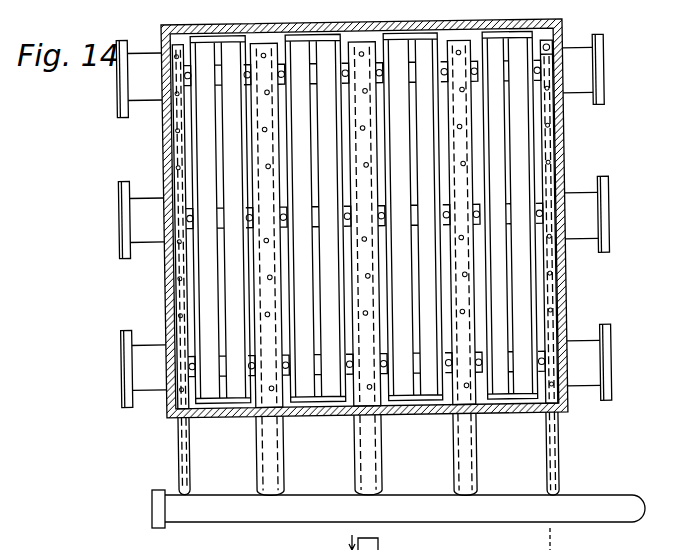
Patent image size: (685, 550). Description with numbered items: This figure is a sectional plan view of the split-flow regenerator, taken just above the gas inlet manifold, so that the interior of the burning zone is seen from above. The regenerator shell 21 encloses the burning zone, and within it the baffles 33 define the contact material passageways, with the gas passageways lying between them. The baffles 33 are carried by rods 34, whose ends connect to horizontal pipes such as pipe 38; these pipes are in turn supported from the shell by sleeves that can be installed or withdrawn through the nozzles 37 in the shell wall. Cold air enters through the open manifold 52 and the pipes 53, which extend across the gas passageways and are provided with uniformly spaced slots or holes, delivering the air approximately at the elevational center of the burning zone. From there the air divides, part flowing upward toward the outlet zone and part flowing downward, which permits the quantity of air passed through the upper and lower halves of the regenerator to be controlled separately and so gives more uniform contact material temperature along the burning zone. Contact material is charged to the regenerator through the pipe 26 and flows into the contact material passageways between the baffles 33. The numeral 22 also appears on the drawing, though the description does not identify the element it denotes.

The regenerator shell 21 is at (564, 154).
The base 22 is at (514, 539).
The pipe 26 is at (380, 545).
The baffle 33 is at (208, 282).
The rod 34 is at (252, 391).
The nozzle 37 is at (149, 92).
The horizontal pipe 38 is at (550, 49).
The open manifold 52 is at (608, 523).
The pipe 53 is at (253, 456).